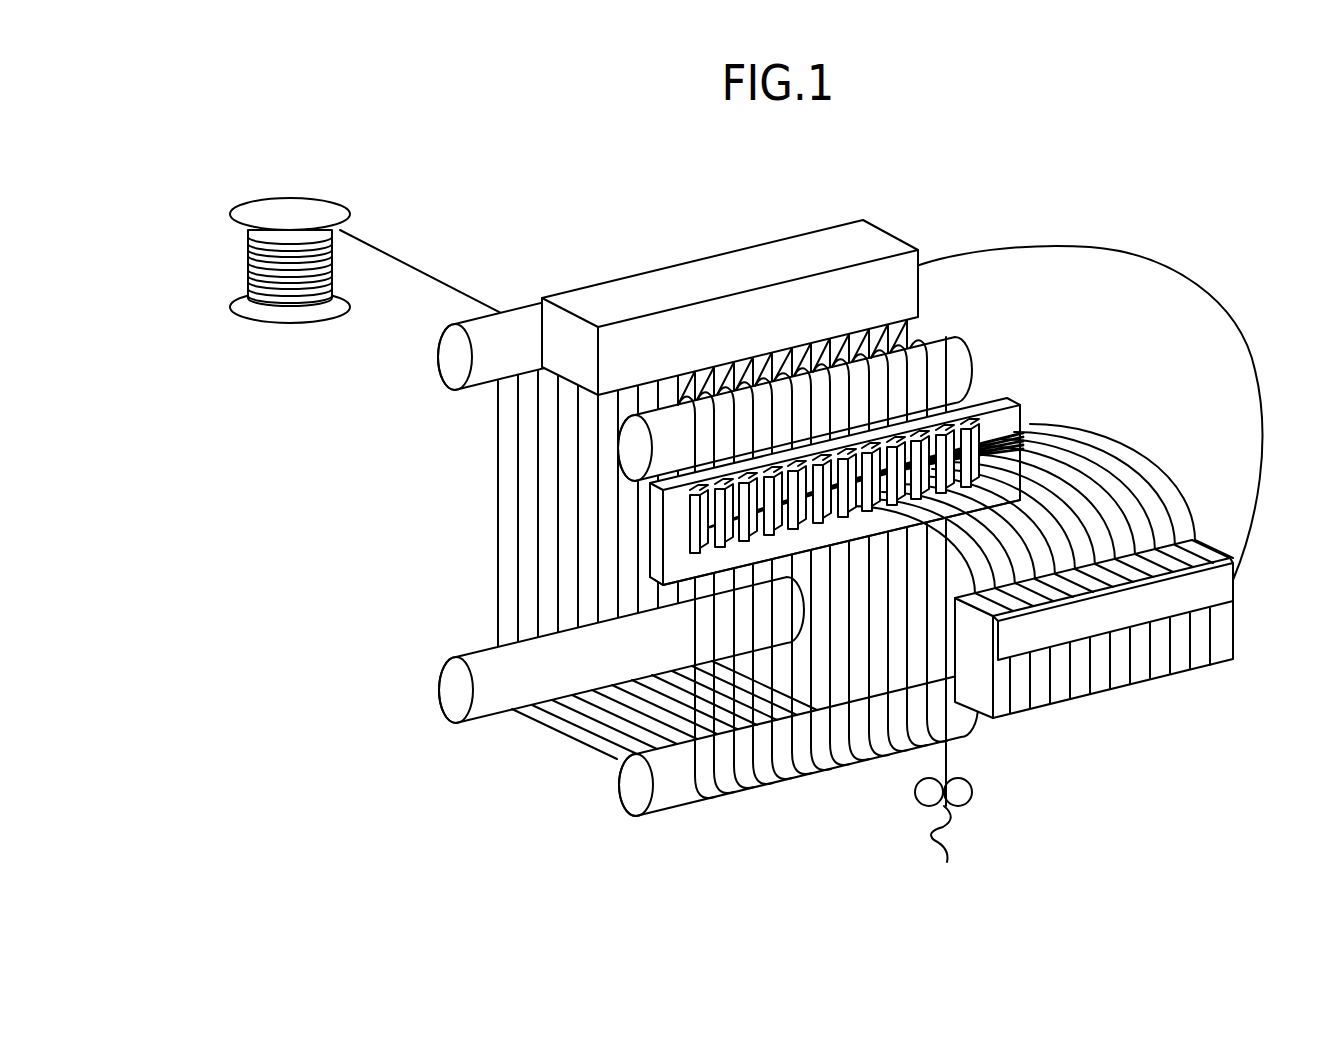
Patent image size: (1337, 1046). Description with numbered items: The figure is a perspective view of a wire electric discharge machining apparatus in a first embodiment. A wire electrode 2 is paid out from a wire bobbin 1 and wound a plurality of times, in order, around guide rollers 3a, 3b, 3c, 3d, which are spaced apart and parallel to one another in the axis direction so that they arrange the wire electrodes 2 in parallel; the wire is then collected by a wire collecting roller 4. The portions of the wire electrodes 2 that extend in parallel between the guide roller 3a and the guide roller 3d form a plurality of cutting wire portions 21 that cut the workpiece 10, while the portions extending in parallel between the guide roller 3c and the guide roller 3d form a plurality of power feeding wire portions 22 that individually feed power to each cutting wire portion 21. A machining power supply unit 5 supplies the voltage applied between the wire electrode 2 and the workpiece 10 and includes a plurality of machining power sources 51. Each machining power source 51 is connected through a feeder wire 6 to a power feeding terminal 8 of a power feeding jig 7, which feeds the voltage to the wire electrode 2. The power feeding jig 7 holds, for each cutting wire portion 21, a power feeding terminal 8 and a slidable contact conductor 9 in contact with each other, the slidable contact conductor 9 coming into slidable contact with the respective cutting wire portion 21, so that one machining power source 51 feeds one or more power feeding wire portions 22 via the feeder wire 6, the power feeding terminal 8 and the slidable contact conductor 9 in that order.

The wire bobbin 1 is at (308, 203).
The wire electrode 2 is at (405, 262).
The guide roller 3a is at (488, 330).
The guide roller 3b is at (452, 693).
The guide roller 3c is at (628, 795).
The guide roller 3d is at (967, 372).
The wire collecting roller 4 is at (923, 790).
The machining power supply unit 5 is at (975, 727).
The machining power source 51 is at (1203, 543).
The feeder wire 6 is at (1133, 447).
The power feeding jig 7 is at (1012, 420).
The power feeding terminal 8 is at (700, 522).
The slidable contact conductor 9 is at (692, 536).
The workpiece 10 is at (874, 232).
The cutting wire portion 21 is at (799, 362).
The power feeding wire portion 22 is at (830, 645).